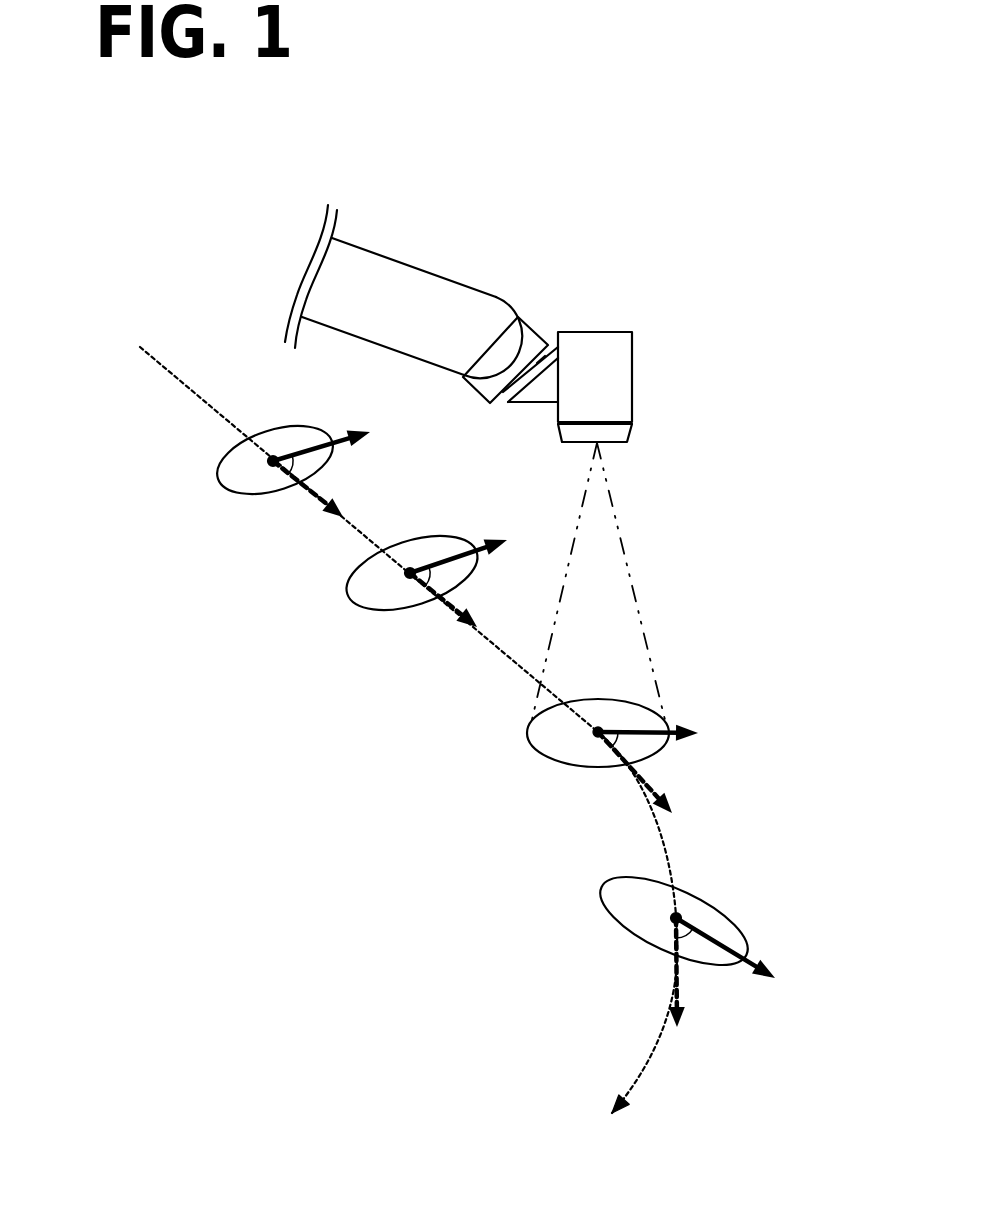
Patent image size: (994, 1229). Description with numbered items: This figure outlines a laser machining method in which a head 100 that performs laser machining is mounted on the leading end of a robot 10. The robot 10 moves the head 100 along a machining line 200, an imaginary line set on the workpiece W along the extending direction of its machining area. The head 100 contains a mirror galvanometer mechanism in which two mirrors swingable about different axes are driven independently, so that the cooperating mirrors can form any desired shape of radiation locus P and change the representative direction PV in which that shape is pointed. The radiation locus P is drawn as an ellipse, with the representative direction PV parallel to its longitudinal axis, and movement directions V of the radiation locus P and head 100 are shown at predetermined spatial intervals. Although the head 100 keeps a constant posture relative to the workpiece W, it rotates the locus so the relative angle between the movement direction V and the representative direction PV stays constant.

The robot 10 is at (486, 259).
The head 100 is at (605, 342).
The machining line 200 is at (165, 368).
The workpiece W is at (710, 611).
The radiation locus P is at (543, 758).
The representative direction PV is at (630, 727).
The movement direction V is at (650, 785).